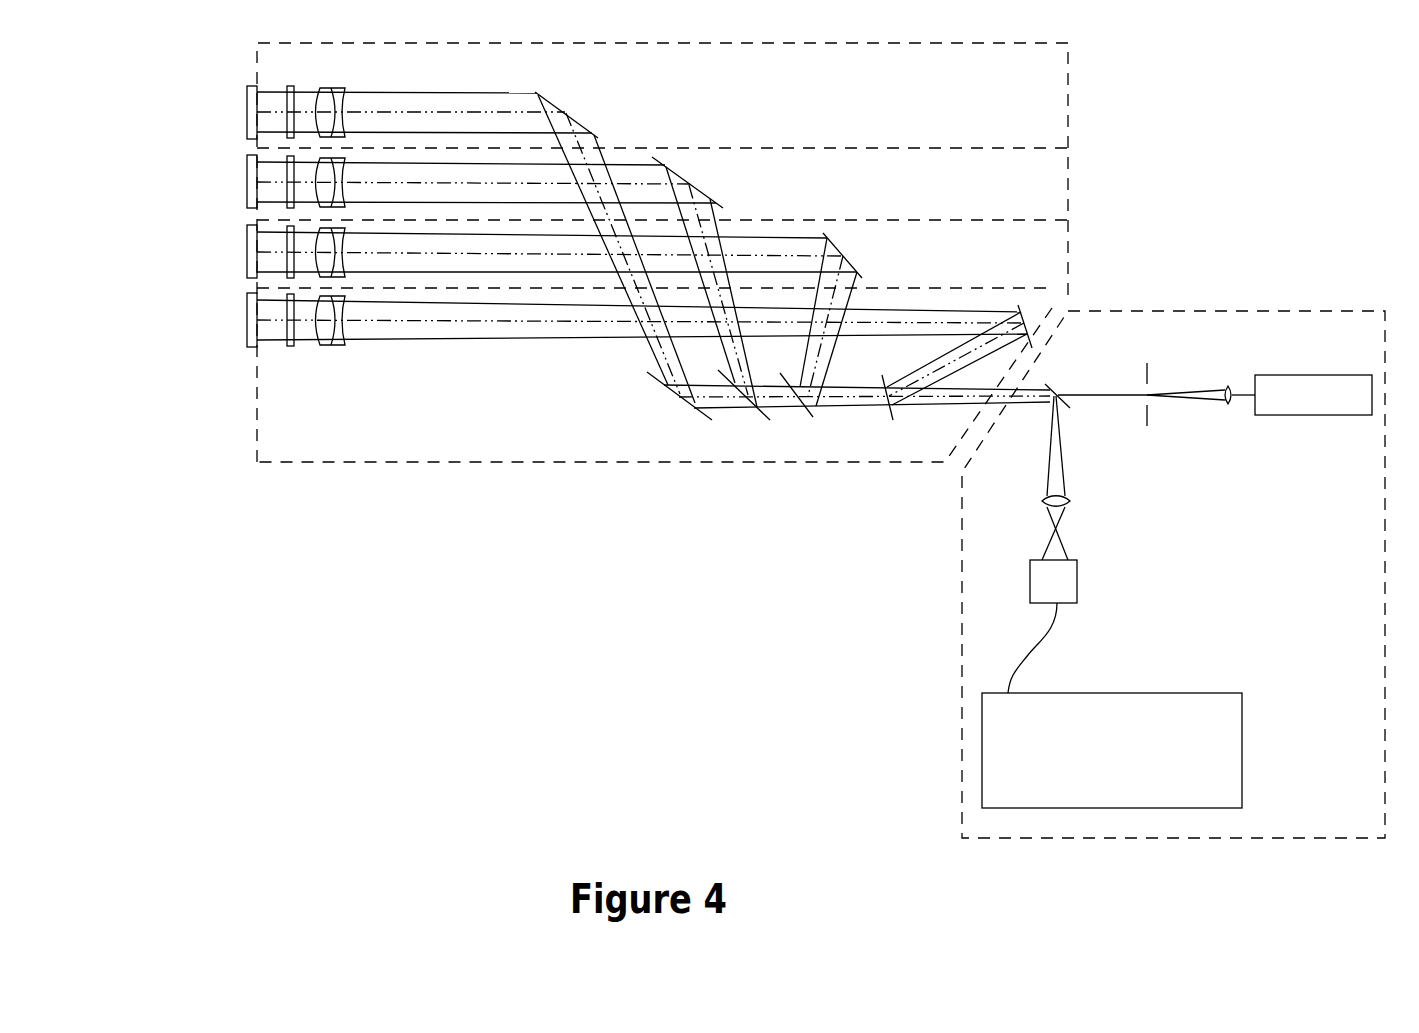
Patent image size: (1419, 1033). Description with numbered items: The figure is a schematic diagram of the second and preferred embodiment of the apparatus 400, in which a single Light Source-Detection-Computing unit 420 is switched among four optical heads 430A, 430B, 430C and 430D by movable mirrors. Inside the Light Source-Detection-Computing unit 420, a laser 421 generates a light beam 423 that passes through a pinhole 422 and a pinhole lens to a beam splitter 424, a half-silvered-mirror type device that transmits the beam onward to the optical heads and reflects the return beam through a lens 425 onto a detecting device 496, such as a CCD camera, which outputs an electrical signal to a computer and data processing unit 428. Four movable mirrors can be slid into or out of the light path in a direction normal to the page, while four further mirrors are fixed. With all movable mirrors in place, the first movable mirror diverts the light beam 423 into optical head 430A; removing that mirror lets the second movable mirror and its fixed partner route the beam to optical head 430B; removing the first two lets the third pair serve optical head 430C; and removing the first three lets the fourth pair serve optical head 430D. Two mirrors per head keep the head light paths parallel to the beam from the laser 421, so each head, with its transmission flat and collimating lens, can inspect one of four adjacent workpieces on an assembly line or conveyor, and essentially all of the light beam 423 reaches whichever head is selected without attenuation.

The apparatus 400 is at (615, 657).
The Light Source-Detection-Computing unit 420 is at (1337, 817).
The laser 421 is at (1297, 375).
The pinhole 422 is at (1147, 410).
The light beam 423 is at (1187, 397).
The beam splitter 424 is at (1048, 386).
The lens 425 is at (1042, 500).
The detecting device 496 is at (1030, 583).
The computer and data processing unit 428 is at (1112, 750).
The optical head 430A is at (1048, 310).
The optical head 430B is at (1066, 236).
The optical head 430C is at (1068, 186).
The optical head 430D is at (1068, 90).